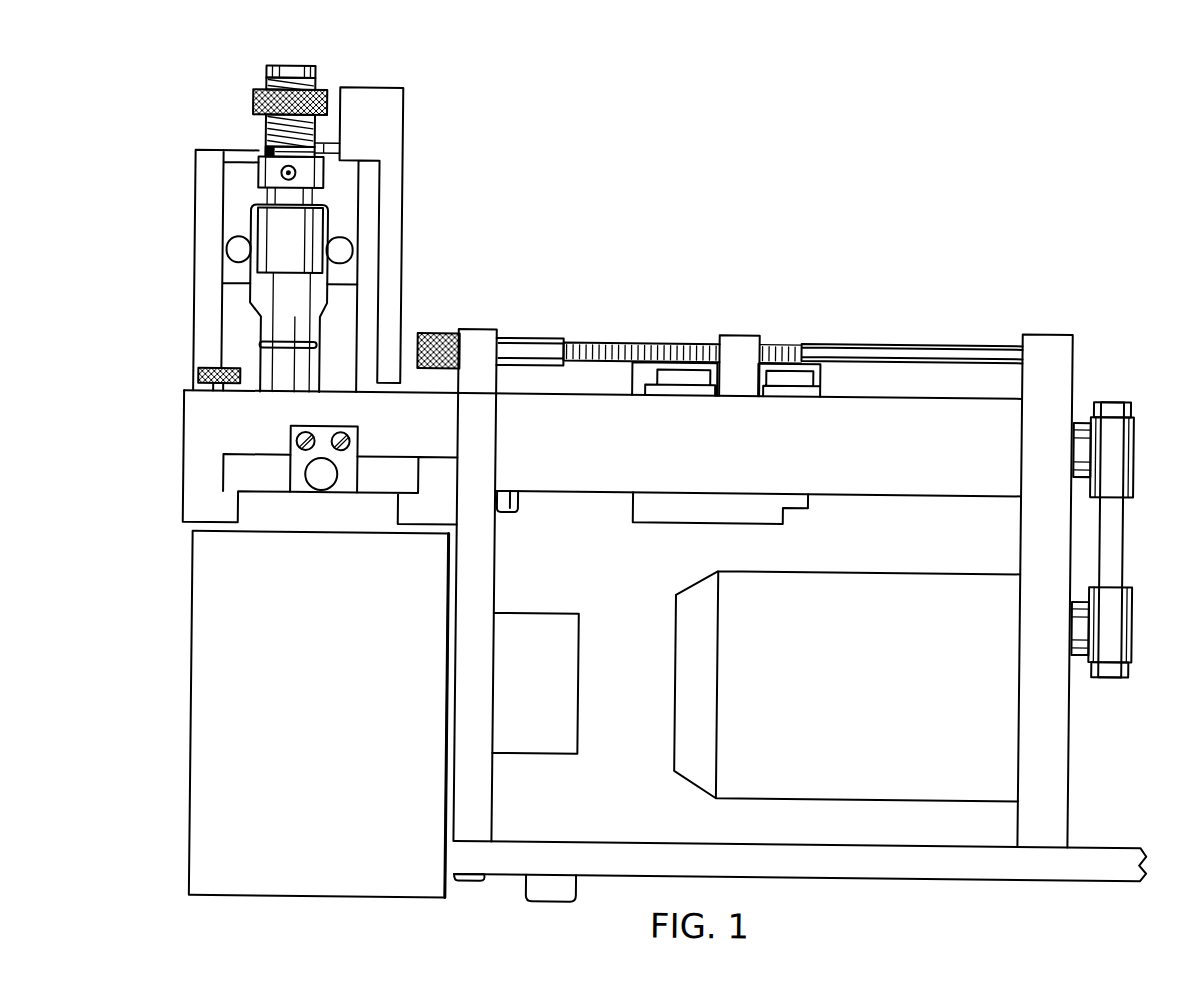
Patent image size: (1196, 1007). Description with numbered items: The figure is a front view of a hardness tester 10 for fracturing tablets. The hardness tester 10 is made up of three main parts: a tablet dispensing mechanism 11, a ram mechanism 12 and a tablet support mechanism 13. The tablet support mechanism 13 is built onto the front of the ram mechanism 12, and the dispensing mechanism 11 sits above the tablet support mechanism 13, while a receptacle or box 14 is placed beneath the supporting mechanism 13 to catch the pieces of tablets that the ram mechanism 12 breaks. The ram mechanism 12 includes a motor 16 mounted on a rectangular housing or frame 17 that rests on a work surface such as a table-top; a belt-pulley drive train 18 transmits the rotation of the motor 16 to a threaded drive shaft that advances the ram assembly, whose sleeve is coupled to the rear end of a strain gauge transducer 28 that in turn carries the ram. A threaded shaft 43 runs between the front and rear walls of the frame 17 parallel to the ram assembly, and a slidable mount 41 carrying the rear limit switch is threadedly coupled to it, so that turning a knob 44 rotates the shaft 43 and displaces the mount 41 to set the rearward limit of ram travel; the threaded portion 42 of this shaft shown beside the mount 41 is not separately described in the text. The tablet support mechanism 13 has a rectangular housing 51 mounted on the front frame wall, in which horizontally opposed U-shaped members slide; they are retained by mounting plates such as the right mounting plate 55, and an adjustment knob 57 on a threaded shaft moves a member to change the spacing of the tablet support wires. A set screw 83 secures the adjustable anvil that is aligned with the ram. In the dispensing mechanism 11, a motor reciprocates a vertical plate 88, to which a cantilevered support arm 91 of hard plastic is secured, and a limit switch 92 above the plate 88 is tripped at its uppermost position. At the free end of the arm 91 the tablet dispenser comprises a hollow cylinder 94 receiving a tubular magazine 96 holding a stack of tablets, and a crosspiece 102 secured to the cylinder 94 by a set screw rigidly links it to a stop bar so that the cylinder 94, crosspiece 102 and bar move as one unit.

The hardness tester 10 is at (799, 897).
The tablet dispensing mechanism 11 is at (269, 224).
The ram mechanism 12 is at (880, 882).
The tablet support mechanism 13 is at (567, 438).
The receptacle or box 14 is at (204, 660).
The motor 16 is at (700, 790).
The rectangular housing or frame 17 is at (1053, 749).
The belt-pulley drive train 18 is at (1116, 531).
The strain gauge transducer 28 is at (636, 507).
The slidable mount 41 is at (746, 345).
The lead screw 42 is at (697, 343).
The threaded shaft 43 is at (814, 350).
The knob 44 is at (420, 336).
The rectangular housing 51 is at (294, 408).
The right mounting plate 55 is at (307, 477).
The adjustment knob 57 is at (318, 482).
The set screw 83 is at (196, 379).
The vertical plate 88 is at (226, 168).
The cantilevered support arm 91 is at (273, 233).
The limit switch 92 is at (331, 153).
The hollow cylinder 94 is at (262, 158).
The tubular magazine 96 is at (261, 74).
The crosspiece 102 is at (258, 178).